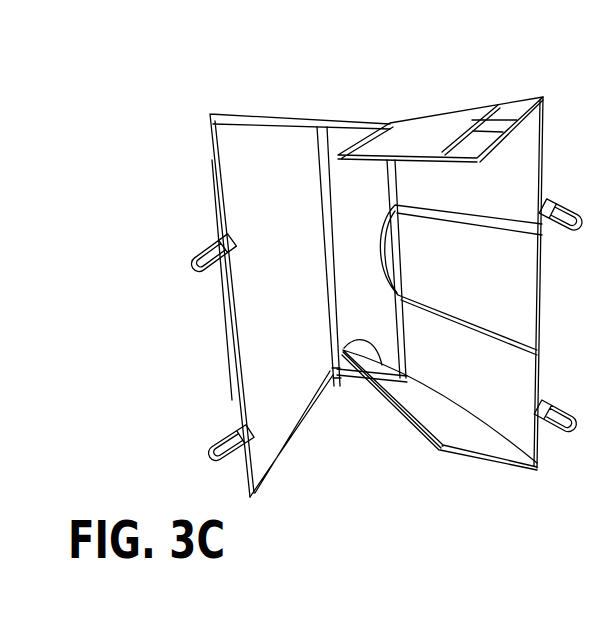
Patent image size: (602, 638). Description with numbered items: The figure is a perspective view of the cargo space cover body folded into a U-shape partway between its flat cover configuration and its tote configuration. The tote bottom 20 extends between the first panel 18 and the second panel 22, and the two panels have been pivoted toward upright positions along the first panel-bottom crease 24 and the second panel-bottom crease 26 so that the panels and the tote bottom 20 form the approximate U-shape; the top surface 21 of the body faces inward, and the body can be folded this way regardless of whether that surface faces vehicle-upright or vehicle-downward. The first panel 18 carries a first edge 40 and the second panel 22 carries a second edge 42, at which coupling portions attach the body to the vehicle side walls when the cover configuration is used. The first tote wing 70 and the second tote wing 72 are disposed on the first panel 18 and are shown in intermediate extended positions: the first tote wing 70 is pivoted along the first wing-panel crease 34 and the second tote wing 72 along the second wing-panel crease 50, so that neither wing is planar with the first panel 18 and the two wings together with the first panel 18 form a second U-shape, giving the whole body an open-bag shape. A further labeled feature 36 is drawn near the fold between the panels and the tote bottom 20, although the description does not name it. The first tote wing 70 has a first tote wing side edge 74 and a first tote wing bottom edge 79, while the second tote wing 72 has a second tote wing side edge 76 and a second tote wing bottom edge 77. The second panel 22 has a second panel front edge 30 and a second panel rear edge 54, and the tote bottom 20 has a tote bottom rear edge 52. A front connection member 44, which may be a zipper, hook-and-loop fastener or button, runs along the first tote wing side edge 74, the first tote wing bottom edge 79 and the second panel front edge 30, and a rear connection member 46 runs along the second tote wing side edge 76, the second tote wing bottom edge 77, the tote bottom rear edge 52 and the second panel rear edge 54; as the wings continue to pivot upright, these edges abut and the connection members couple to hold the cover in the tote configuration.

The first panel 18 is at (477, 302).
The tote bottom 20 is at (350, 222).
The top surface 21 is at (352, 312).
The second panel 22 is at (278, 275).
The first panel-bottom crease 24 is at (395, 248).
The second panel-bottom crease 26 is at (323, 222).
The second panel front edge 30 is at (320, 410).
The first wing-panel crease 34 is at (502, 433).
The spine 36 is at (362, 124).
The first edge 40 is at (543, 338).
The second edge 42 is at (238, 395).
The front connection member 44 is at (262, 122).
The rear connection member 46 is at (280, 450).
The second wing-panel crease 50 is at (480, 102).
The tote bottom rear edge 52 is at (343, 122).
The second panel rear edge 54 is at (232, 113).
The first tote wing 70 is at (460, 433).
The second tote wing 72 is at (430, 133).
The first tote wing side edge 74 is at (418, 423).
The second tote wing side edge 76 is at (420, 155).
The second tote wing bottom edge 77 is at (373, 123).
The first tote wing bottom edge 79 is at (335, 343).